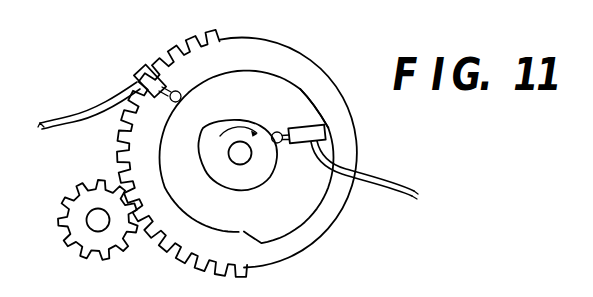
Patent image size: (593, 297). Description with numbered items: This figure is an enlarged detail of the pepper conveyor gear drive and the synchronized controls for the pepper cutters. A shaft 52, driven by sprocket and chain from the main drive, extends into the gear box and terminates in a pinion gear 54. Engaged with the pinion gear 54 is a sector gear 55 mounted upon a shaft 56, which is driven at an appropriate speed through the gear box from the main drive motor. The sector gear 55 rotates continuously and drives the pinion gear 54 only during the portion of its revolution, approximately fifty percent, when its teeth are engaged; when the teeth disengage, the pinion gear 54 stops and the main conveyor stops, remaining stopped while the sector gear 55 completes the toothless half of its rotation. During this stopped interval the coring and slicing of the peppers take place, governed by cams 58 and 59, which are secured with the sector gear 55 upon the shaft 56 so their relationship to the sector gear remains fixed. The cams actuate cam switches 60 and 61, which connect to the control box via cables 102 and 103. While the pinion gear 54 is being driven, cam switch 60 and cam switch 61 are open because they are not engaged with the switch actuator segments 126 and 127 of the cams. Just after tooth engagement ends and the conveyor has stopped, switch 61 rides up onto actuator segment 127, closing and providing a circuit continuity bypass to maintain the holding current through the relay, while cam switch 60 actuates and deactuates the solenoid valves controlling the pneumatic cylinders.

The shaft 52 is at (99, 222).
The pinion gear 54 is at (88, 190).
The sector gear 55 is at (258, 38).
The shaft 56 is at (245, 156).
The cam 58 is at (245, 122).
The cam 59 is at (212, 214).
The cam switch 60 is at (310, 131).
The cam switch 61 is at (137, 67).
The cable 102 is at (383, 178).
The cable 103 is at (92, 108).
The switch actuator segment 126 is at (205, 141).
The switch actuator segment 127 is at (315, 97).